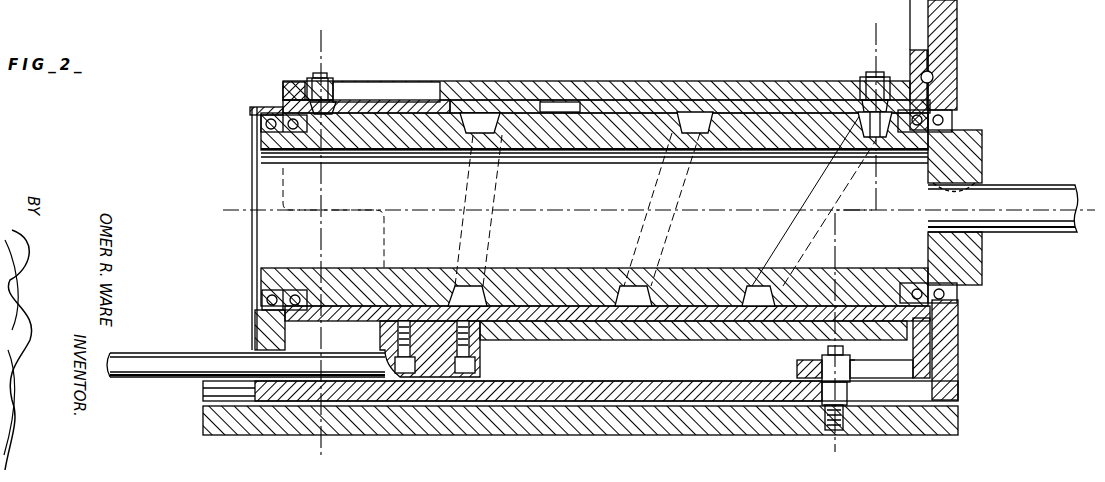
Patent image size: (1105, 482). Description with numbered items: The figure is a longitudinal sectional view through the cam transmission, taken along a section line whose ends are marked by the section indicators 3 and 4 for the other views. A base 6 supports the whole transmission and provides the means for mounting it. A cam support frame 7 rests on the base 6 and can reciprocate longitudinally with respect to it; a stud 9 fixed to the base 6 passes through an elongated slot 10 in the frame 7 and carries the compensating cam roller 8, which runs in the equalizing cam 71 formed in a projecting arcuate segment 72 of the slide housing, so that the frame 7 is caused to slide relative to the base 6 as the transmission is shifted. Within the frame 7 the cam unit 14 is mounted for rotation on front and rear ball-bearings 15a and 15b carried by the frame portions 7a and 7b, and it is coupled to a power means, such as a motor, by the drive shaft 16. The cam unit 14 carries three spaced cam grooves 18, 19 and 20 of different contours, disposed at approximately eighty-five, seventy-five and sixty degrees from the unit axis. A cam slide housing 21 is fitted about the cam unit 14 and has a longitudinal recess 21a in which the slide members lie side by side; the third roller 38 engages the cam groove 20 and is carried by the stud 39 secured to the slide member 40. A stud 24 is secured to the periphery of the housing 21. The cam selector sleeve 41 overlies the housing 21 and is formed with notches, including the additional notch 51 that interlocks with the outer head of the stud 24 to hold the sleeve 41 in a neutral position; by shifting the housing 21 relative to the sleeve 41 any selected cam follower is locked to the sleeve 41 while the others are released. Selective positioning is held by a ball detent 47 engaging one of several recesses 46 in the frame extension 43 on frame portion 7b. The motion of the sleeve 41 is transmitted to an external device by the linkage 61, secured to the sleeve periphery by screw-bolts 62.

The section line 3- 3 is at (292, 28).
The section line 4- 4 is at (850, 23).
The base 6 is at (598, 422).
The cam support frame 7 is at (958, 331).
The frame portion 7a is at (257, 333).
The frame portion 7b is at (950, 320).
The compensating cam roller 8 is at (830, 362).
The stud 9 is at (842, 391).
The elongated slot 10 is at (905, 391).
The cam unit 14 is at (606, 120).
The front ball-bearing 15a is at (270, 114).
The rear ball-bearing 15b is at (950, 122).
The drive shaft 16 is at (1033, 190).
The cam 18 is at (478, 114).
The cam groove 19 is at (685, 112).
The cam 20 is at (830, 181).
The cam slide housing 21 is at (401, 105).
The longitudinal recess 21a is at (568, 104).
The stud 24 is at (326, 80).
The third roller 38 is at (888, 128).
The stud 39 is at (870, 73).
The slide member 40 is at (735, 95).
The cylindrical sleeve 41 is at (538, 90).
The frame extension 43 is at (952, 30).
The recesses 46 is at (934, 78).
The ball detent 47 is at (933, 70).
The additional notch 51 is at (371, 87).
The linkage 61 is at (152, 355).
The screw-bolts 62 is at (470, 364).
The equalizing cam 71 is at (903, 368).
The projecting arcuate segment 72 is at (800, 370).